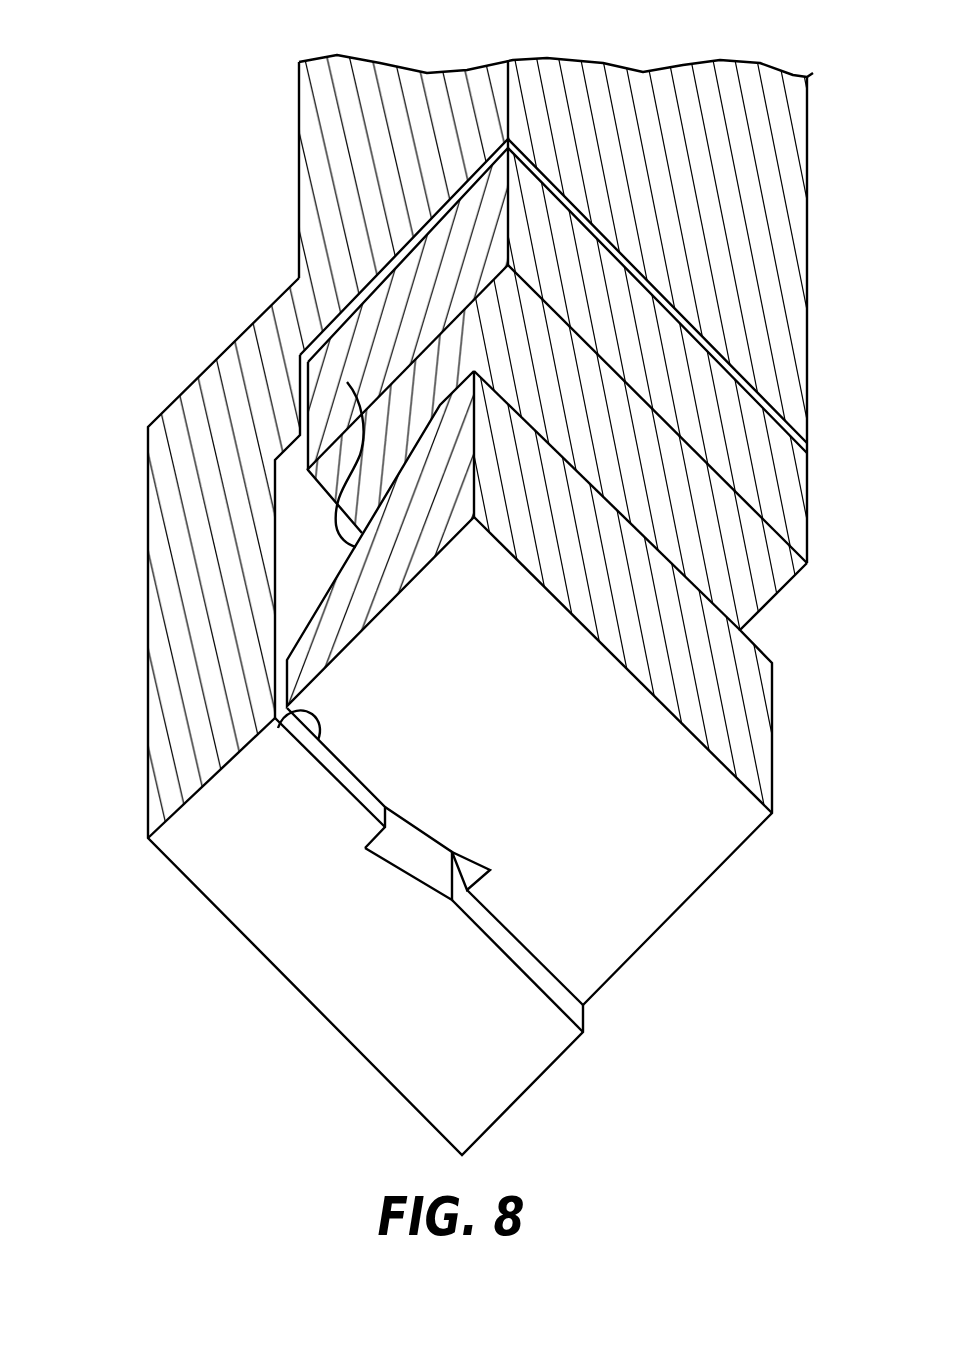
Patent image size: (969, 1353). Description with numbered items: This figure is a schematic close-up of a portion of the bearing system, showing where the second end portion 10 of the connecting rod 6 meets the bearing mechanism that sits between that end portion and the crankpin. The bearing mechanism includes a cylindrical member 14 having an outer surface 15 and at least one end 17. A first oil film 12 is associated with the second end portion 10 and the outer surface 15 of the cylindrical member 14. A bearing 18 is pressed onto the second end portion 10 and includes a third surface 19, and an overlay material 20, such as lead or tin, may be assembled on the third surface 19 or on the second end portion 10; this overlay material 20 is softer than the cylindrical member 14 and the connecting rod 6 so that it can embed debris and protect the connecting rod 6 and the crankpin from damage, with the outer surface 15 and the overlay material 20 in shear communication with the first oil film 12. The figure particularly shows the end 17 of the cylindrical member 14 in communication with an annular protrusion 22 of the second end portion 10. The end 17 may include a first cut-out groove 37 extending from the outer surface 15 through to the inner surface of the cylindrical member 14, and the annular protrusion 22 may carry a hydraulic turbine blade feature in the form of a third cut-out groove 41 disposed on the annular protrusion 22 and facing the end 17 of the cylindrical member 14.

The connecting rod 6 is at (378, 210).
The second end portion 10 is at (108, 552).
The first oil film 12 is at (777, 612).
The cylindrical member 14 is at (347, 608).
The outer surface 15 is at (460, 393).
The end 17 is at (242, 750).
The bearing 18 is at (510, 139).
The third surface 19 is at (605, 362).
The overlay material 20 is at (635, 475).
The annular protrusion 22 is at (328, 775).
The first cut-out groove 37 is at (478, 858).
The third cut-out groove 41 is at (388, 863).